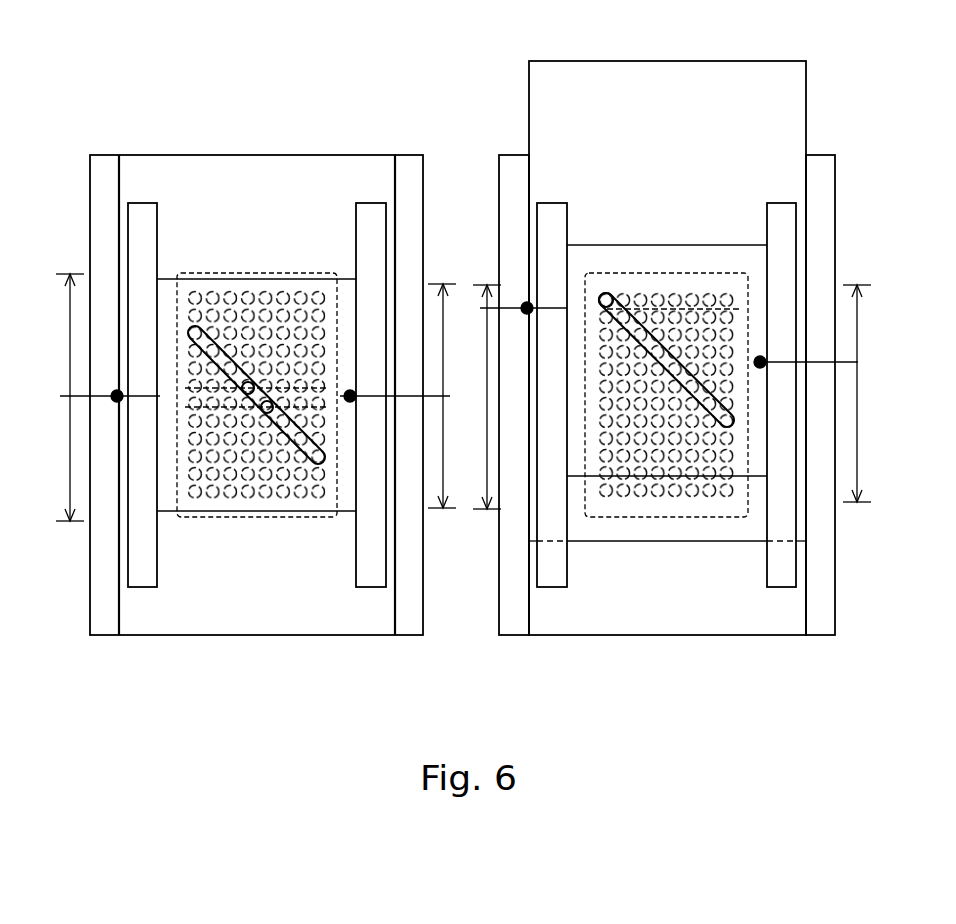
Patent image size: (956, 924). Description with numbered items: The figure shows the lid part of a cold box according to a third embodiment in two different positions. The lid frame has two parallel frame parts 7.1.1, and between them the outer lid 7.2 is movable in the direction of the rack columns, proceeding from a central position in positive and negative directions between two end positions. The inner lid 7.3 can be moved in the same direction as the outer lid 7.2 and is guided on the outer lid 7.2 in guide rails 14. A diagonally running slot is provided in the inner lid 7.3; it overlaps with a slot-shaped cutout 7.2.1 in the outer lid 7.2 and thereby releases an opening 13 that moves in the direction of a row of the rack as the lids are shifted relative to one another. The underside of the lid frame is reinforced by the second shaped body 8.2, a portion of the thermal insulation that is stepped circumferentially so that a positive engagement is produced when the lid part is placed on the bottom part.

The frame part 7.1.1 is at (103, 195).
The guide rail 14 is at (148, 222).
The outer lid 7.2 is at (213, 165).
The inner lid 7.3 is at (352, 335).
The opening 13 is at (257, 395).
The slot-shaped cutout 7.2.1 is at (177, 512).
The second shaped body 8.2 is at (713, 612).